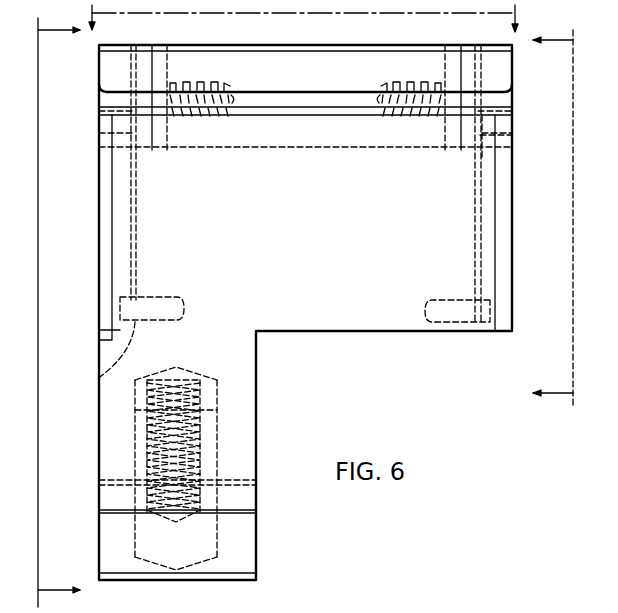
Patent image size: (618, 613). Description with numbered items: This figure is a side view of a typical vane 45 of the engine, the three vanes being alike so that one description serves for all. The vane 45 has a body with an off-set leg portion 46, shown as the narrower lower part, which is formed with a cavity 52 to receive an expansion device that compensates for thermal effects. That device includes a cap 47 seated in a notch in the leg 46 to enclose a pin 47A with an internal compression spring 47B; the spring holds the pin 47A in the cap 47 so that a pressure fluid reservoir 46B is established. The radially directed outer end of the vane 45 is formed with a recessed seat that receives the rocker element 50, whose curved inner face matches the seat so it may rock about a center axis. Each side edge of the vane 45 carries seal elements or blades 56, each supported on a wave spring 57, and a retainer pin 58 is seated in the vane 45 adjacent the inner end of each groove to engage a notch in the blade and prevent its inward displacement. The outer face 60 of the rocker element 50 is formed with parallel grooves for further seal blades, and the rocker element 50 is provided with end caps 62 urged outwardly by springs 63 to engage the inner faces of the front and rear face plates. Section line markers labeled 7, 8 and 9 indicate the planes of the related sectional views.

The vane 45 is at (283, 282).
The off-set leg portion 46 is at (235, 377).
The pressure fluid reservoir 46B is at (138, 394).
The cap 47 is at (237, 550).
The pin 47A is at (145, 540).
The internal compression spring 47B is at (200, 435).
The rocker element 50 is at (315, 65).
The cavity 52 is at (135, 428).
The seal element 56 is at (102, 198).
The wave spring 57 is at (133, 213).
The retainer pin 58 is at (289, 148).
The outer face 60 is at (239, 45).
The end cap 62 is at (108, 75).
The spring 63 is at (204, 117).
The section line 7- 7 is at (567, 218).
The section line 8- 8 is at (48, 311).
The section line 9- 9 is at (304, 16).